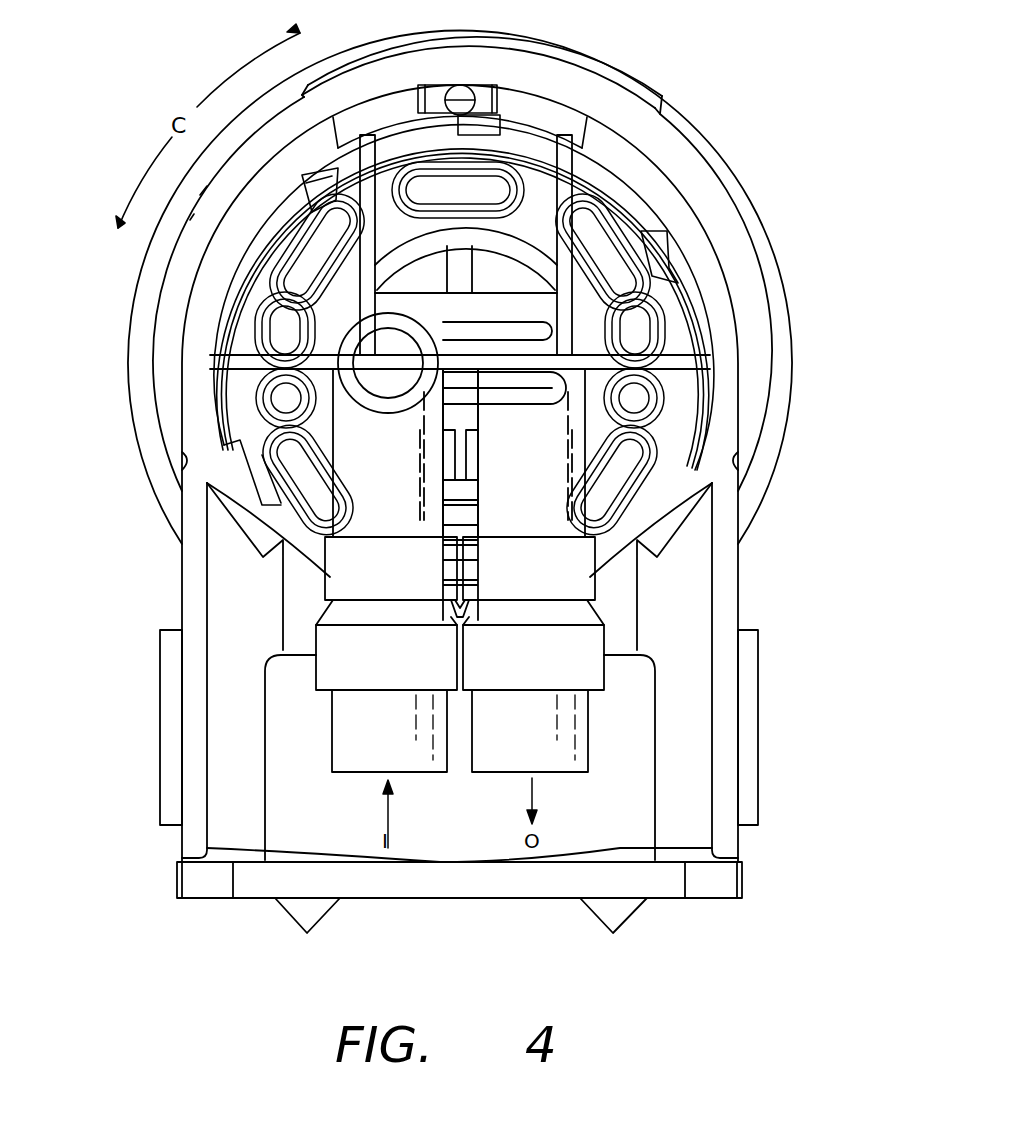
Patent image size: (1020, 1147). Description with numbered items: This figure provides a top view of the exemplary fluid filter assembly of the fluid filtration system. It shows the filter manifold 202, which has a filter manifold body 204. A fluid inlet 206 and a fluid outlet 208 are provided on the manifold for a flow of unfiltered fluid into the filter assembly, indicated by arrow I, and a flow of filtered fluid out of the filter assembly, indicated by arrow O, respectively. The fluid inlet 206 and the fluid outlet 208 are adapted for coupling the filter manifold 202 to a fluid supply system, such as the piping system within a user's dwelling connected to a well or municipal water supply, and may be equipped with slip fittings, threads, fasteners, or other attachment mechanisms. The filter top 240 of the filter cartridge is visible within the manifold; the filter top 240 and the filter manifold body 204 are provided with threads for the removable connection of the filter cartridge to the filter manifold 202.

The filter manifold 202 is at (147, 857).
The filter manifold body 204 is at (727, 595).
The fluid inlet 206 is at (343, 745).
The fluid outlet 208 is at (570, 748).
The filter top 240 is at (707, 163).